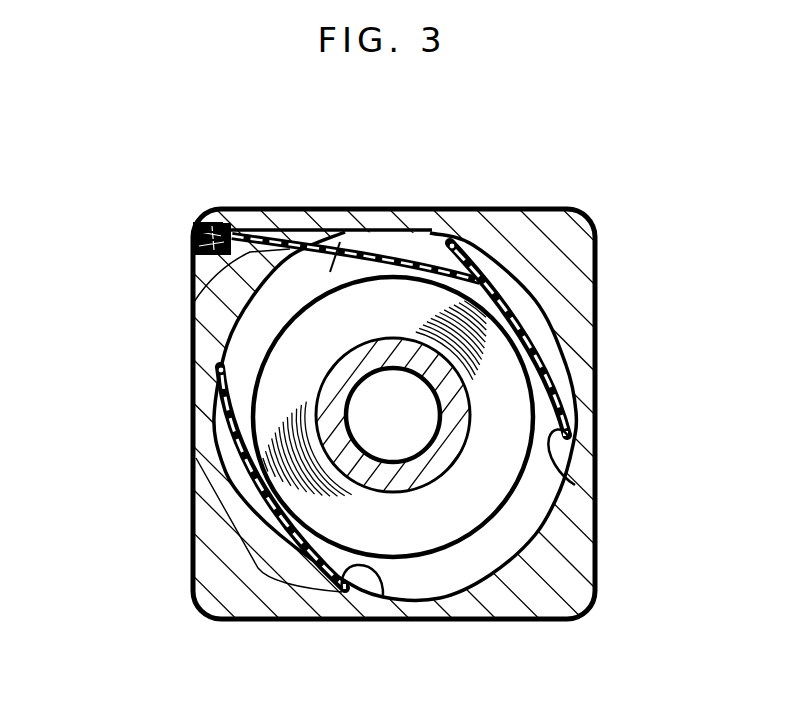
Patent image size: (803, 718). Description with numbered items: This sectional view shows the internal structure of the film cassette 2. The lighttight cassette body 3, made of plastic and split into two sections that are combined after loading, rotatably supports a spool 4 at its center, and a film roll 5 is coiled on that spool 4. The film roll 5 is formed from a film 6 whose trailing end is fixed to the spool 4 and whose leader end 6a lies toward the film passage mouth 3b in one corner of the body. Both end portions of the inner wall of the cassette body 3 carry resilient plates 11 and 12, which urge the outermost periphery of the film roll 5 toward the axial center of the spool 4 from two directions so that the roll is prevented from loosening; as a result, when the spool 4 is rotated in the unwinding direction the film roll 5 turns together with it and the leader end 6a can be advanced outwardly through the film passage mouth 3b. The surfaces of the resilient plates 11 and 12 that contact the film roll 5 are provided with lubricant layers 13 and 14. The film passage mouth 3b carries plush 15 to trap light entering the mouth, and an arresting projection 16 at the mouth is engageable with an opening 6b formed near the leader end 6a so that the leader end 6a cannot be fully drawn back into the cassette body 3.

The film cassette 2 is at (553, 172).
The cassette body 3 is at (205, 543).
The film passage mouth 3b is at (193, 238).
The spool 4 is at (339, 377).
The film roll 5 is at (483, 500).
The film 6 is at (365, 268).
The leader end 6a is at (213, 222).
The opening 6b is at (240, 265).
The resilient plate 11 is at (545, 371).
The resilient plate 12 is at (245, 460).
The lubricant layer 13 is at (563, 468).
The lubricant layer 14 is at (372, 570).
The plush 15 is at (193, 247).
The arresting projection 16 is at (230, 235).